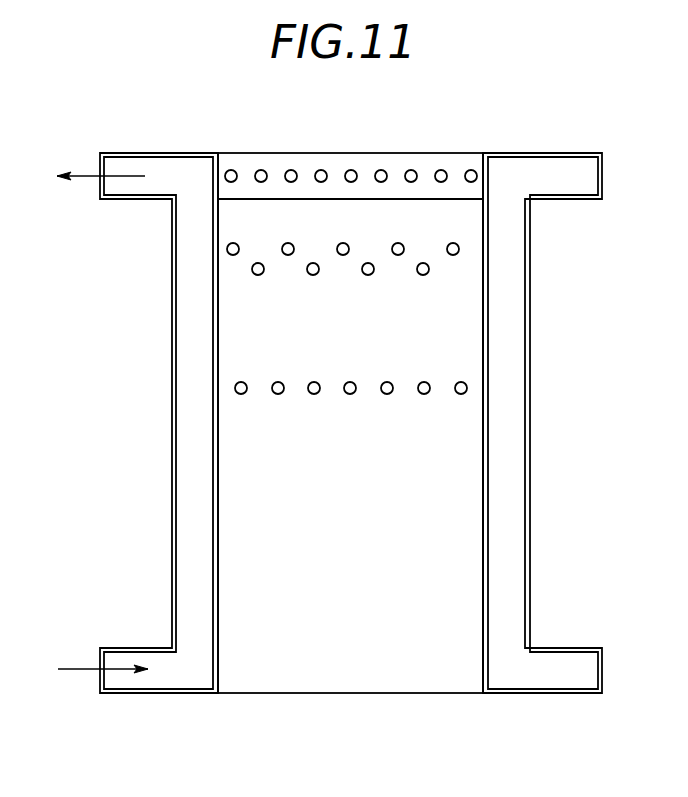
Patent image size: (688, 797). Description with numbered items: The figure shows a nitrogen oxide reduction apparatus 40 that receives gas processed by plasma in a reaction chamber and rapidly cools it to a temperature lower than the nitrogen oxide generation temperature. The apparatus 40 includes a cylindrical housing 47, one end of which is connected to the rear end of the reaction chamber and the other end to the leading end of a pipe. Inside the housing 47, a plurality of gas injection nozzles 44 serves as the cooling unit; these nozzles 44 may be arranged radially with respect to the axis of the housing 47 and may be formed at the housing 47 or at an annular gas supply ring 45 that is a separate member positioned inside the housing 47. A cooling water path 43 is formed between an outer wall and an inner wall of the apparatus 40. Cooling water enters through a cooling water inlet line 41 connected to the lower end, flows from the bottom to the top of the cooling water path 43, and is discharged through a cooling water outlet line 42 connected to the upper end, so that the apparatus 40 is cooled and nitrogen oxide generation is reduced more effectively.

The nitrogen oxide reduction apparatus 40 is at (329, 448).
The cooling water inlet line 41 is at (122, 660).
The cooling water outlet line 42 is at (163, 165).
The cooling water path 43 is at (182, 491).
The gas injection nozzles 44 is at (234, 170).
The gas supply ring 45 is at (333, 153).
The housing 47 is at (350, 670).